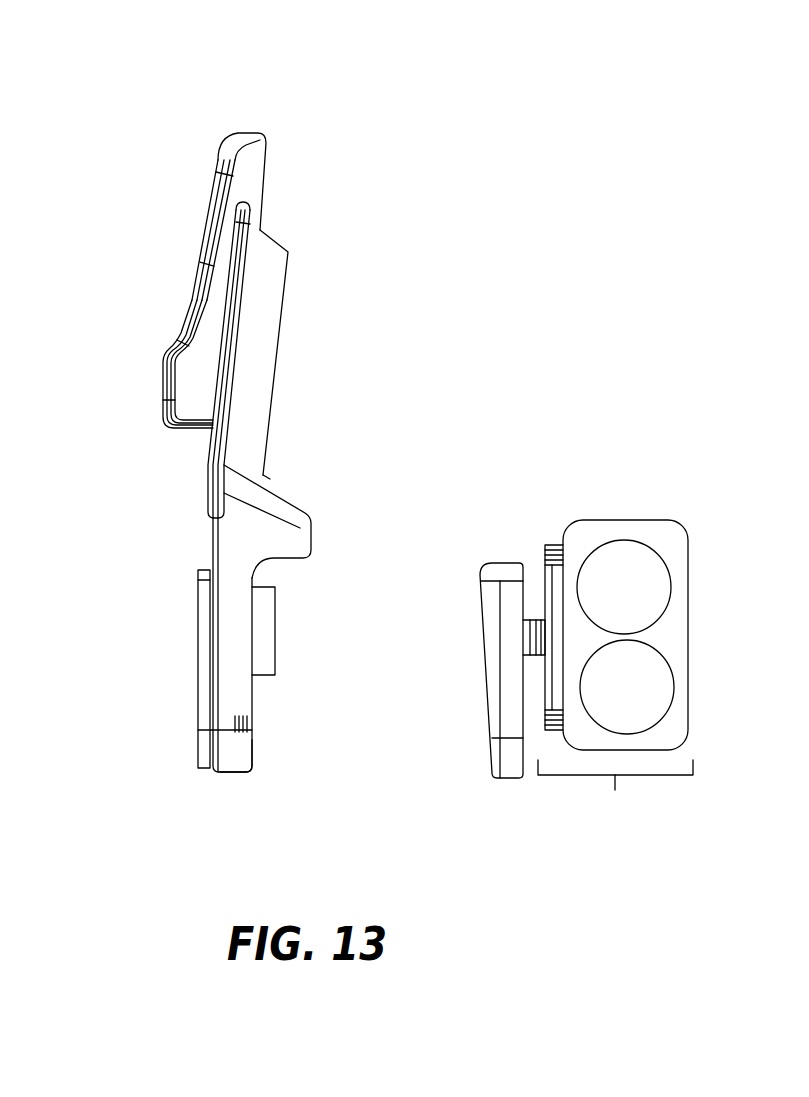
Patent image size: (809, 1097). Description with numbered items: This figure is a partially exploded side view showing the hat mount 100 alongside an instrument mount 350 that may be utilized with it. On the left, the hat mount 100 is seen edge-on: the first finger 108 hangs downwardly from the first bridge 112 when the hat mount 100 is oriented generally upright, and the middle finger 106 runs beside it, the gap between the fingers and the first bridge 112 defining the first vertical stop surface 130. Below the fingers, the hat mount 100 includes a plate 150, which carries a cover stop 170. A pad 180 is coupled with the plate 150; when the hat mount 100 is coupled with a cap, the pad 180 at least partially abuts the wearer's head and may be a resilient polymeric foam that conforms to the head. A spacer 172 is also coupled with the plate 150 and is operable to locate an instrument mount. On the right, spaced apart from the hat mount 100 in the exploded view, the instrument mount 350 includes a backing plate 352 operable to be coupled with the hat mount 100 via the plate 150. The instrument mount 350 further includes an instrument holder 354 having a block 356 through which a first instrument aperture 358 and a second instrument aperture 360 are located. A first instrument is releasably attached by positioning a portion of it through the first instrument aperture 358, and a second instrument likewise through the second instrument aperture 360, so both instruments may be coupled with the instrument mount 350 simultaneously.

The hat mount 100 is at (176, 124).
The first bridge 112 is at (240, 132).
The middle finger 106 is at (262, 232).
The first finger 108 is at (187, 383).
The cover stop 170 is at (303, 511).
The pad 180 is at (194, 662).
The spacer 172 is at (266, 645).
The first vertical stop surface 130 is at (265, 732).
The plate 150 is at (249, 753).
The instrument mount 350 is at (612, 507).
The backing plate 352 is at (498, 560).
The block 356 is at (672, 632).
The first instrument aperture 358 is at (645, 586).
The second instrument aperture 360 is at (655, 698).
The instrument holder 354 is at (617, 793).